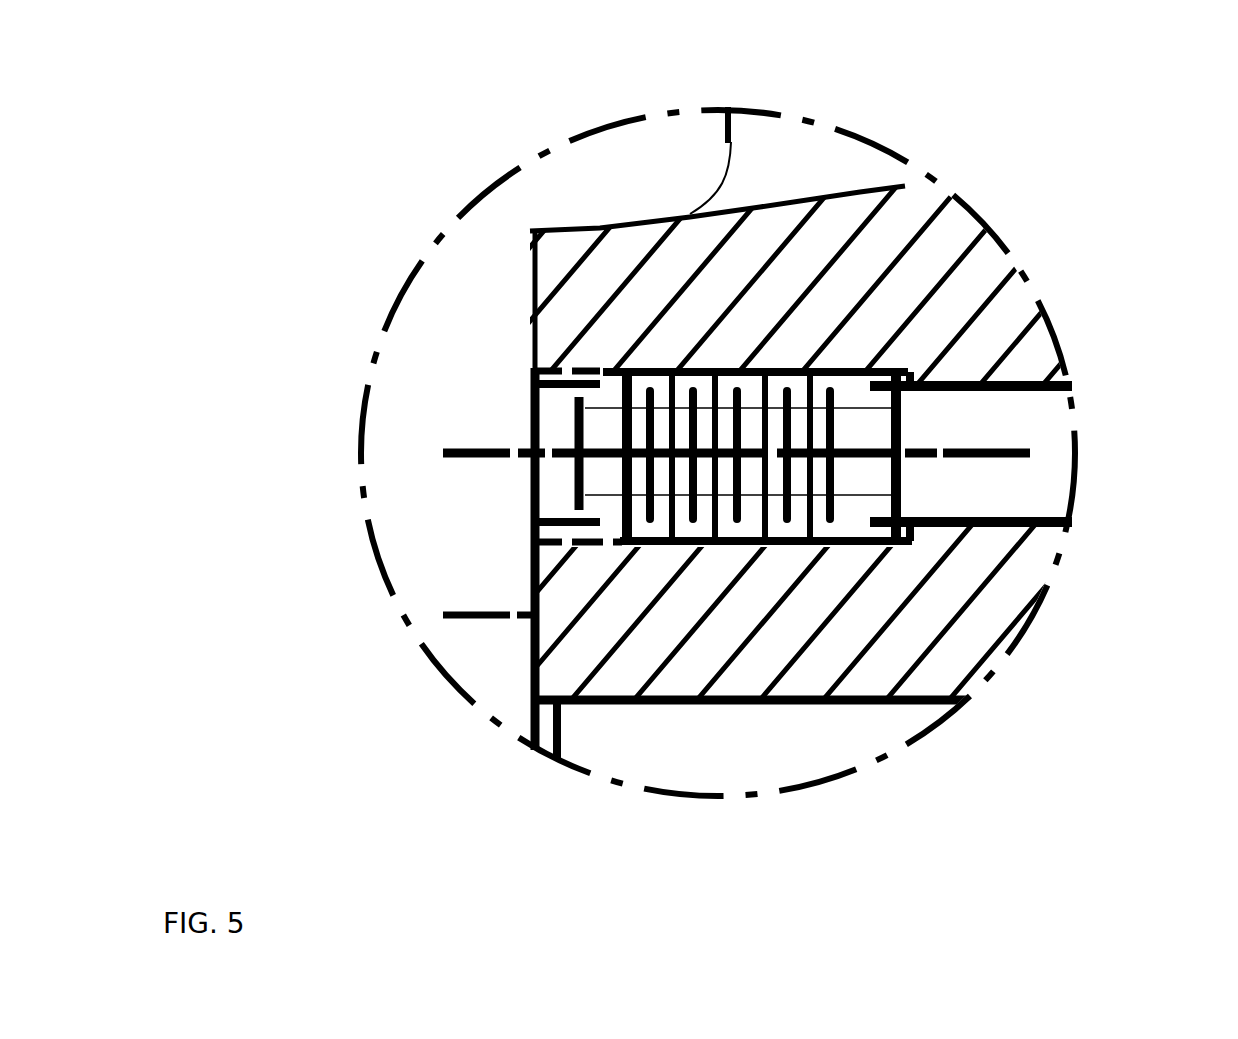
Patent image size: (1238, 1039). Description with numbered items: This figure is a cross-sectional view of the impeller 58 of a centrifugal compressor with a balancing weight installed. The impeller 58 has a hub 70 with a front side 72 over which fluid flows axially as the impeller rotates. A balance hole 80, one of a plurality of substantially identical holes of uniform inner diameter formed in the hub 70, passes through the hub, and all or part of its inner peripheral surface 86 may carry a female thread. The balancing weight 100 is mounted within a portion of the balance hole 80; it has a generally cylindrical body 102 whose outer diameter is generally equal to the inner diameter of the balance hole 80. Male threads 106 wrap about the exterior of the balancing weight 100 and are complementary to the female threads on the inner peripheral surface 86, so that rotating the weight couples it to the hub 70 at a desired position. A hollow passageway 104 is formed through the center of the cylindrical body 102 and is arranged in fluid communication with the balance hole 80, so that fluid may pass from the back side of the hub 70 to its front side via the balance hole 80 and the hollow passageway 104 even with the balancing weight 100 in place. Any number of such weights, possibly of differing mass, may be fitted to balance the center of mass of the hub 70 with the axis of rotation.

The impeller 58 is at (261, 141).
The hub 70 is at (880, 257).
The front side 72 is at (634, 227).
The balance hole 80 is at (1037, 475).
The inner peripheral surface 86 is at (715, 324).
The male threads 106 is at (632, 367).
The balancing weight 100 is at (609, 517).
The cylindrical body 102 is at (603, 393).
The hollow passageway 104 is at (610, 474).